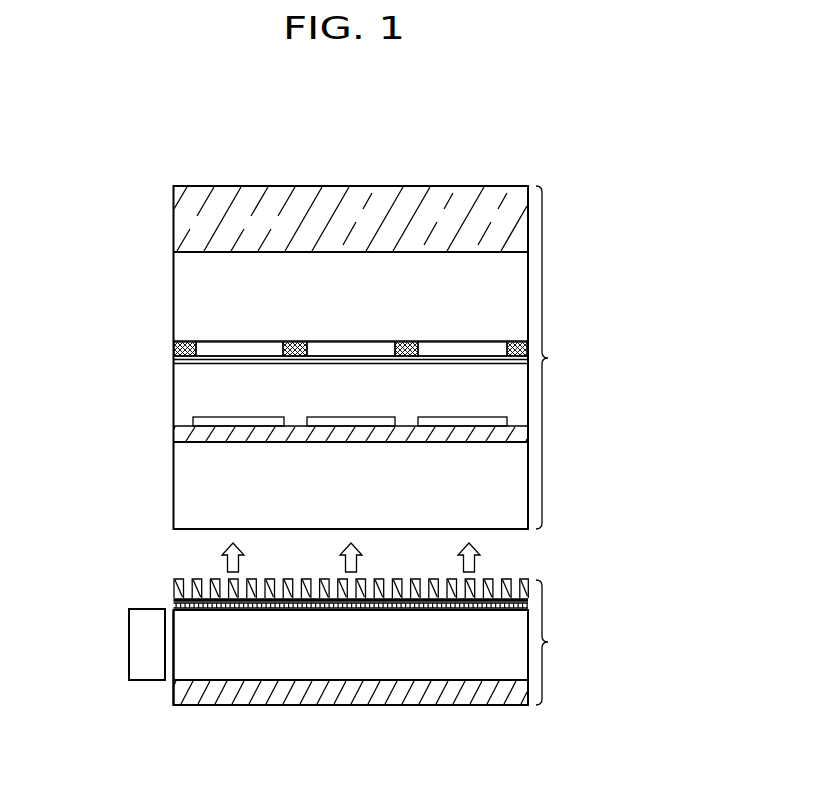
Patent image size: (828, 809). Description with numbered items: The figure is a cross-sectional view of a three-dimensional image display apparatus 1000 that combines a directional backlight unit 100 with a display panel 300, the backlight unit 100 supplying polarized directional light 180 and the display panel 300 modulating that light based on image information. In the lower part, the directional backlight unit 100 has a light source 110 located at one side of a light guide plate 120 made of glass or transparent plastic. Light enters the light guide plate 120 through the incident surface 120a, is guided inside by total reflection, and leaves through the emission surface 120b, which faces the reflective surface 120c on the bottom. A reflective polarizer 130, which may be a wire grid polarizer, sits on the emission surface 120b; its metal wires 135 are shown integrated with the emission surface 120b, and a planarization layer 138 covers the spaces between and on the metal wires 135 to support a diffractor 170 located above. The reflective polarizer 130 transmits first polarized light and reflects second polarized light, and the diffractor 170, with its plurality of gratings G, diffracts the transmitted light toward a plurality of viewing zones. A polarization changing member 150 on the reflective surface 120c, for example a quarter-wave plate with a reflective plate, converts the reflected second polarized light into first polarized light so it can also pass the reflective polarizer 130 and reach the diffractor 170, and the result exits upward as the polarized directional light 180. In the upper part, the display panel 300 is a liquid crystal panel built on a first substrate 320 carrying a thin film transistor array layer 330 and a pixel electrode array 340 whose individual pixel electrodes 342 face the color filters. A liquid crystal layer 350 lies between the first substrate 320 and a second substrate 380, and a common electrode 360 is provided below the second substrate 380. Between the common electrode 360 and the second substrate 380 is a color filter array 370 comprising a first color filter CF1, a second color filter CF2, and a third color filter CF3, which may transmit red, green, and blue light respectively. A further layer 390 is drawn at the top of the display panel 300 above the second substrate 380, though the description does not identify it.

The 3D image display apparatus 1000 is at (594, 171).
The display panel 300 is at (387, 357).
The polarizer / upper substrate layer 390 is at (173, 220).
The second substrate 380 is at (173, 292).
The color filter array 370 is at (166, 344).
The common electrode 360 is at (173, 360).
The liquid crystal layer 350 is at (173, 383).
The pixel electrode array 340 is at (172, 417).
The pixel electrode 342 is at (352, 416).
The thin film transistor array layer 330 is at (173, 432).
The first substrate 320 is at (173, 477).
The first color filter CF1 is at (245, 343).
The second color filter CF2 is at (358, 343).
The third color filter CF3 is at (470, 343).
The polarized directional light 180 is at (494, 558).
The directional backlight unit 100 is at (386, 642).
The diffractor 170 is at (165, 576).
The reflective polarizer 130 is at (164, 599).
The grating G is at (195, 578).
The light source 110 is at (145, 672).
The light guide plate 120 is at (360, 673).
The incident surface 120a is at (175, 640).
The emission surface 120b is at (520, 611).
The reflective surface 120c is at (464, 678).
The metal wire 135 is at (262, 611).
The planarization layer 138 is at (312, 611).
The polarization changing member 150 is at (410, 702).